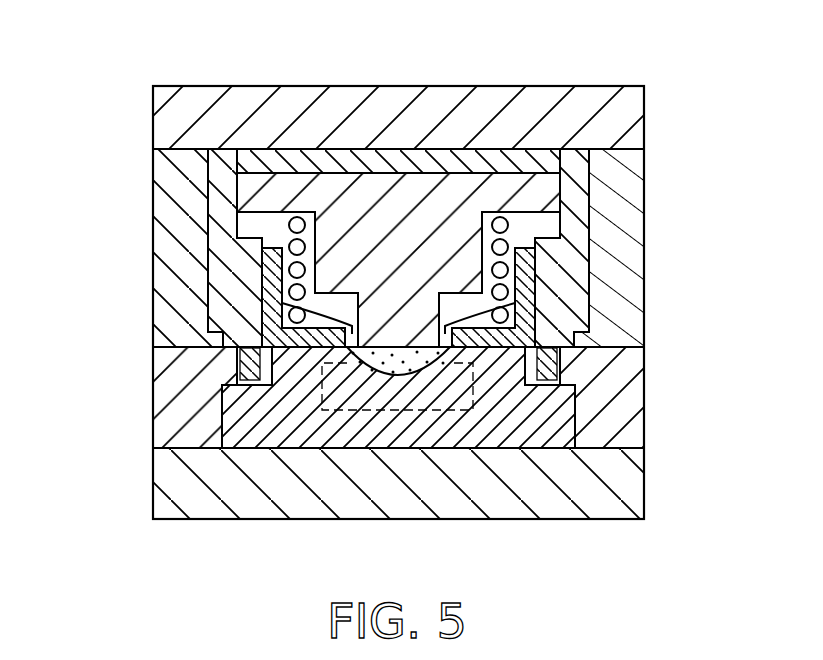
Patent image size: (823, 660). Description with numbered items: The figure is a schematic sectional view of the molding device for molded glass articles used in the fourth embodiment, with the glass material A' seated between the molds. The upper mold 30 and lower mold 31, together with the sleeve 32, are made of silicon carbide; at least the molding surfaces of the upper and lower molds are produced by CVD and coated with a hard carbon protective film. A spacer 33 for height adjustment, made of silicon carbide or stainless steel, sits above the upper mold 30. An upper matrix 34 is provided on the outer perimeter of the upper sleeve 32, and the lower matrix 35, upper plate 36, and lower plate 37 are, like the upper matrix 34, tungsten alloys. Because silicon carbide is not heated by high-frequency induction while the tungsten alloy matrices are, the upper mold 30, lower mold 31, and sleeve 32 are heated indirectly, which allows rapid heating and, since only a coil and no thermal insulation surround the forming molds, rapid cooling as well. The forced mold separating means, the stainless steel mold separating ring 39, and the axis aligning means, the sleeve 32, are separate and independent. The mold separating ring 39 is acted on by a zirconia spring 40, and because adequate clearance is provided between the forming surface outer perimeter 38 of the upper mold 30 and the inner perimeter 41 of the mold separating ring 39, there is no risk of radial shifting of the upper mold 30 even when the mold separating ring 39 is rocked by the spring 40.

The upper mold 30 is at (373, 218).
The lower mold 31 is at (386, 423).
The sleeve 32 is at (228, 259).
The spacer 33 is at (472, 165).
The upper matrix 34 is at (183, 185).
The lower matrix 35 is at (205, 425).
The upper plate 36 is at (203, 123).
The lower plate 37 is at (257, 475).
The forming surface outer perimeter 38 is at (278, 305).
The mold separating ring 39 is at (236, 352).
The spring 40 is at (325, 246).
The inner perimeter 41 is at (330, 319).
The molded glass material A' is at (443, 467).